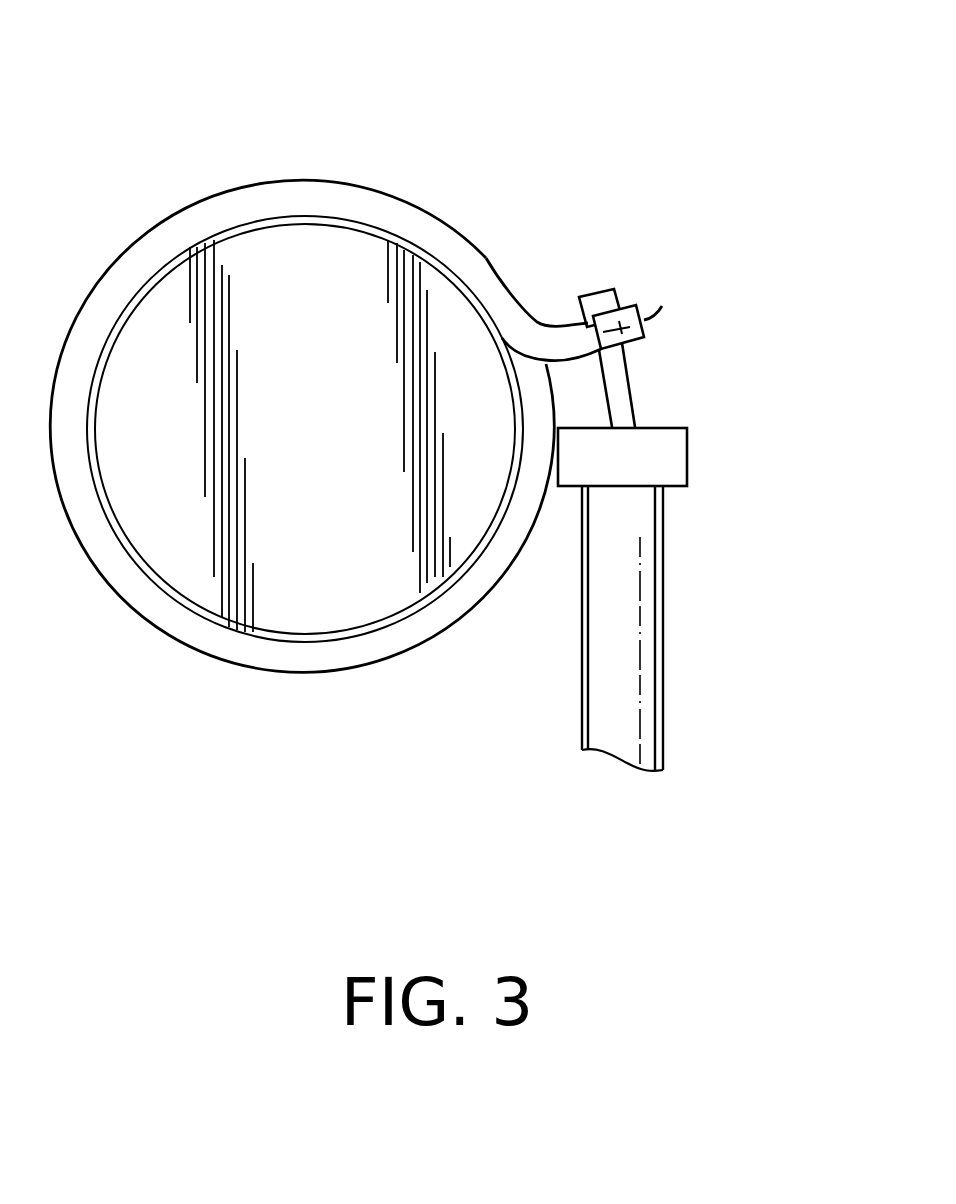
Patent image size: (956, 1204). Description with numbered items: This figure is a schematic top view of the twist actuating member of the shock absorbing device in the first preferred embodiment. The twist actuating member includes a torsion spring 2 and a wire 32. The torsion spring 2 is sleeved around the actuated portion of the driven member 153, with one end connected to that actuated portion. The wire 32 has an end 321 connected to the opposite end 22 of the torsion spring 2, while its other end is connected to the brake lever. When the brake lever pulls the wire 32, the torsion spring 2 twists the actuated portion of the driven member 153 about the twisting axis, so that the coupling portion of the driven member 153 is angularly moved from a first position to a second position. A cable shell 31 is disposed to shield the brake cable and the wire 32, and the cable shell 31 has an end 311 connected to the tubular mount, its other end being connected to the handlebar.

The torsion spring 2 is at (333, 178).
The opposite end of the torsion spring 22 is at (576, 332).
The end of the wire 321 is at (662, 305).
The wire 32 is at (620, 392).
The end of the cable shell 311 is at (632, 500).
The cable shell 31 is at (638, 678).
The driven member 153 is at (313, 595).